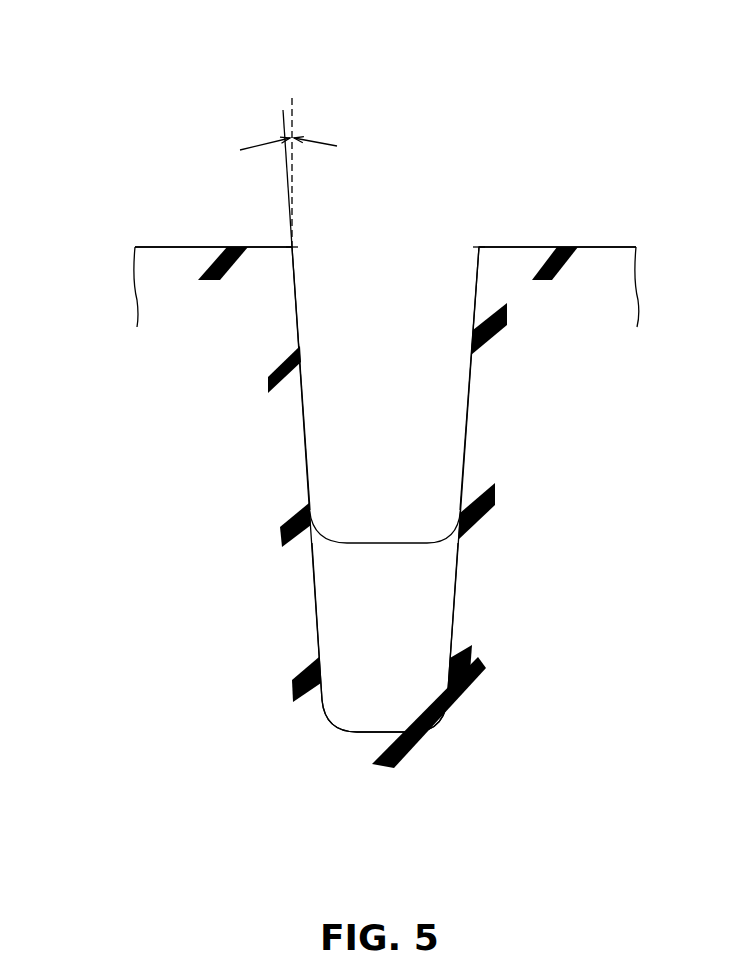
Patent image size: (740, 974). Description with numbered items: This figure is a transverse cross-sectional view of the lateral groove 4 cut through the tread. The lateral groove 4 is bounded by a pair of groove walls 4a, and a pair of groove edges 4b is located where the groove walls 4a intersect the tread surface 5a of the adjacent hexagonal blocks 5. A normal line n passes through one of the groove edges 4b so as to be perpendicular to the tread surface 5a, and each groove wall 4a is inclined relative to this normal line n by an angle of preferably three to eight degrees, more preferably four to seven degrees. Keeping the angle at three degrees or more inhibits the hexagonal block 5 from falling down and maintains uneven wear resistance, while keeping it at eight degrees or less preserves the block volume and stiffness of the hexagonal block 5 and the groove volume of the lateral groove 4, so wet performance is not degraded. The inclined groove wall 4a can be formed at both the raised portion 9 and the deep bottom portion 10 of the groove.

The lateral groove 4 is at (427, 233).
The groove wall 4a is at (298, 308).
The groove edge 4b is at (297, 247).
The hexagonal block 5 is at (200, 185).
The tread surface 5a is at (180, 246).
The raised portion 9 is at (473, 443).
The deep bottom portion 10 is at (468, 615).
The normal line n is at (293, 113).